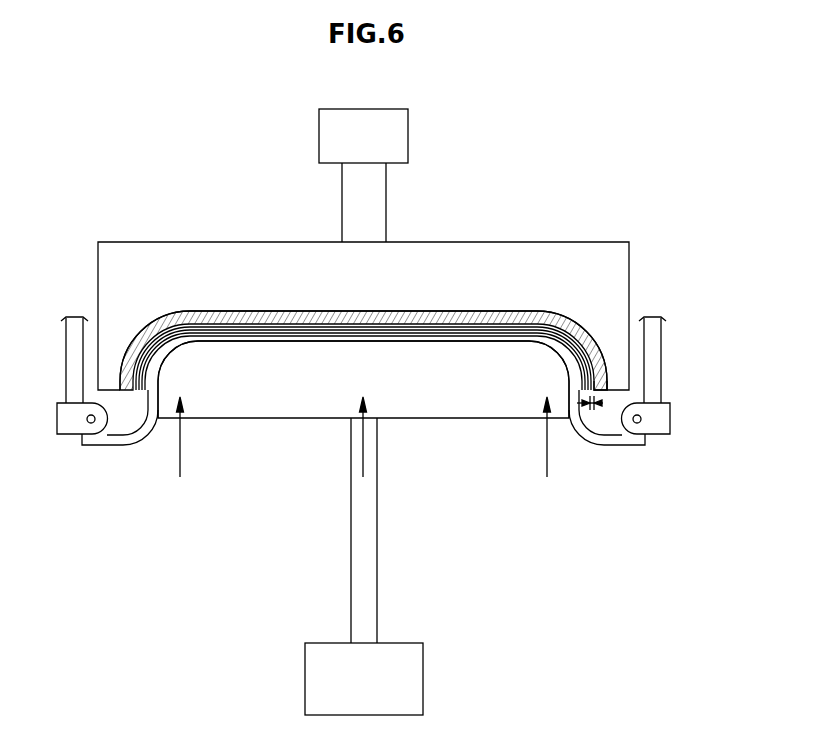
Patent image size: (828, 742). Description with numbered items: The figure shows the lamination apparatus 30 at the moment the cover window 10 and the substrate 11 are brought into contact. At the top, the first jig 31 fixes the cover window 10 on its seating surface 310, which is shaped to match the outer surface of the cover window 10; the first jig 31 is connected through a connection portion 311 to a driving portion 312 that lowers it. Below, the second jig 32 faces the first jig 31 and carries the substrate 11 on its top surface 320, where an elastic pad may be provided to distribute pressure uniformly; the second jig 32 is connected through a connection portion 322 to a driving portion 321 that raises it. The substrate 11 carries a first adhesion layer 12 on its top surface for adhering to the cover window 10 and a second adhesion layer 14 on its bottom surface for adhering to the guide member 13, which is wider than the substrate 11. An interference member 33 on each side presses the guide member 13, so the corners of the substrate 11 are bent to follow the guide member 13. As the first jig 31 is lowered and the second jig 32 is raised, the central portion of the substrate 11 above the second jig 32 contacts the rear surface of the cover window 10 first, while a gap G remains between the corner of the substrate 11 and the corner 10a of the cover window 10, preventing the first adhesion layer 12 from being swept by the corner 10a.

The lamination apparatus 30 is at (159, 80).
The first jig 31 is at (583, 252).
The seating surface 310 is at (487, 308).
The connection portion 311 is at (378, 195).
The driving portion 312 is at (397, 127).
The second jig 32 is at (505, 412).
The top surface 320 is at (363, 340).
The driving portion 321 is at (417, 682).
The connection portion 322 is at (375, 617).
The interference member 33 is at (60, 417).
The cover window 10 is at (435, 310).
The corner 10a is at (610, 400).
The substrate 11 is at (290, 330).
The first adhesion layer 12 is at (263, 323).
The guide member 13 is at (630, 447).
The second adhesion layer 14 is at (312, 333).
The gap G is at (590, 412).